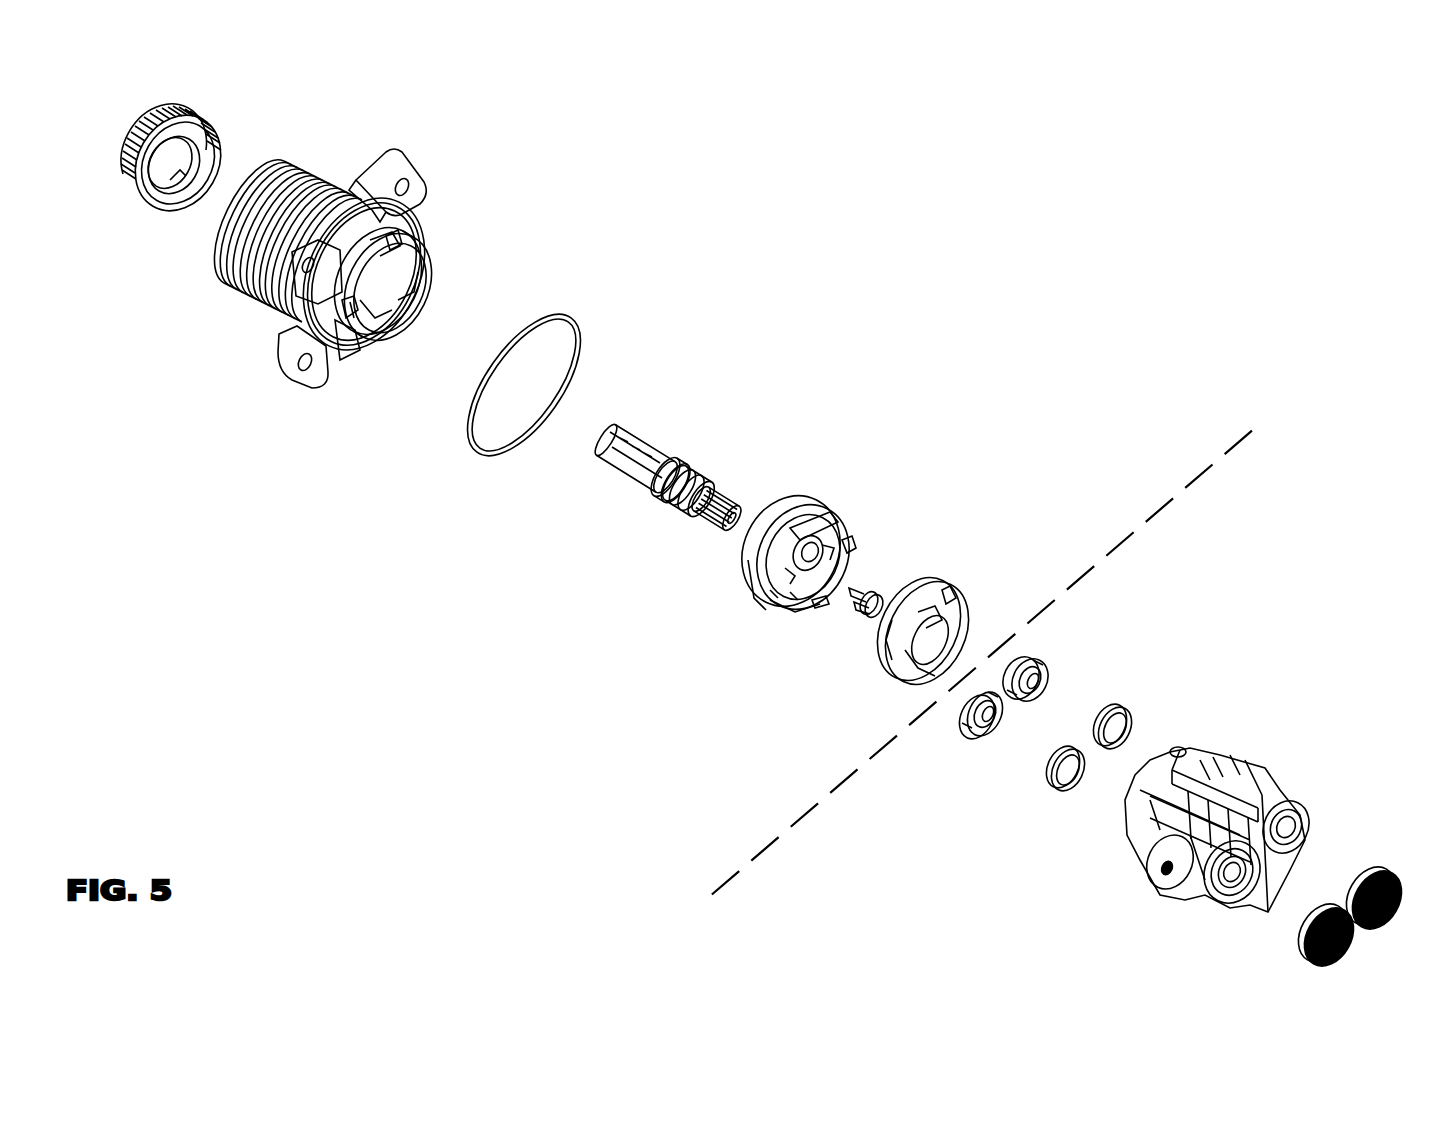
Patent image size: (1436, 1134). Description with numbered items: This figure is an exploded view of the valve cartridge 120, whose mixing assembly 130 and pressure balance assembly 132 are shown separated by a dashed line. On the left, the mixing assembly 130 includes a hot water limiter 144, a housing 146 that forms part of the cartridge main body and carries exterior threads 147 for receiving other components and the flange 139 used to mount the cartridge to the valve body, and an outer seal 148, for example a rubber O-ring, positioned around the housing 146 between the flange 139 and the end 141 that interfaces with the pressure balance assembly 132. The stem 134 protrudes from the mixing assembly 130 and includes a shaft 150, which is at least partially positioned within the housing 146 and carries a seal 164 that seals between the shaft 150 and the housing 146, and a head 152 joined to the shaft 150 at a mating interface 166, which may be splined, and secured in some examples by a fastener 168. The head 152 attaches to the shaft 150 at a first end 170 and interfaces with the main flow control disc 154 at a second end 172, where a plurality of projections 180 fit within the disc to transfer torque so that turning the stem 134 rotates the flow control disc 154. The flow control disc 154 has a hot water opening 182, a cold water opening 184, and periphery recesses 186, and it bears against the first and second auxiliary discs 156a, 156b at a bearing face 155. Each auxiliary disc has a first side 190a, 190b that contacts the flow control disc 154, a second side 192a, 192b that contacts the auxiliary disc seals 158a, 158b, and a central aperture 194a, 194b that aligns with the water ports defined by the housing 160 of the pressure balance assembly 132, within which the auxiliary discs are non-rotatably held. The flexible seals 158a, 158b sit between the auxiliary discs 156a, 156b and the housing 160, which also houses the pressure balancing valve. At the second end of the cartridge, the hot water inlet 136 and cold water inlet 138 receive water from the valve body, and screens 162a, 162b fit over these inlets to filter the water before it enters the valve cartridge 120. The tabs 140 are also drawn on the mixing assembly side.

The valve cartridge 120 is at (1124, 189).
The mixing assembly 130 is at (723, 219).
The pressure balance assembly 132 is at (1345, 734).
The stem 134 is at (772, 466).
The hot water inlet 136 is at (1296, 829).
The cold water inlet 138 is at (1226, 880).
The flange 139 is at (365, 301).
The retaining tabs 140 is at (390, 238).
The end 141 is at (334, 374).
The hot water limiter 144 is at (193, 98).
The housing 146 is at (283, 262).
The exterior threads 147 is at (300, 178).
The outer seal 148 is at (578, 323).
The shaft 150 is at (683, 463).
The head 152 is at (775, 566).
The main flow control disc 154 is at (931, 619).
The bearing face 155 is at (942, 610).
The first auxiliary disc 156a is at (1110, 643).
The second auxiliary disc 156b is at (947, 776).
The first auxiliary disc seal 158a is at (1131, 714).
The second auxiliary disc seal 158b is at (1060, 782).
The housing 160 is at (1212, 788).
The first screen 162a is at (1384, 876).
The second screen 162b is at (1310, 938).
The seal 164 is at (691, 468).
The mating interface 166 is at (714, 524).
The fastener 168 is at (878, 590).
The first end 170 is at (727, 570).
The second end 172 is at (788, 640).
The projections 180 is at (838, 543).
The hot water opening 182 is at (948, 652).
The cold water opening 184 is at (925, 648).
The periphery recesses 186 is at (882, 632).
The first side 190a is at (1023, 648).
The first side 190b is at (957, 712).
The second side 192a is at (1044, 683).
The second side 192b is at (983, 727).
The central aperture 194a is at (1040, 690).
The central aperture 194b is at (988, 723).